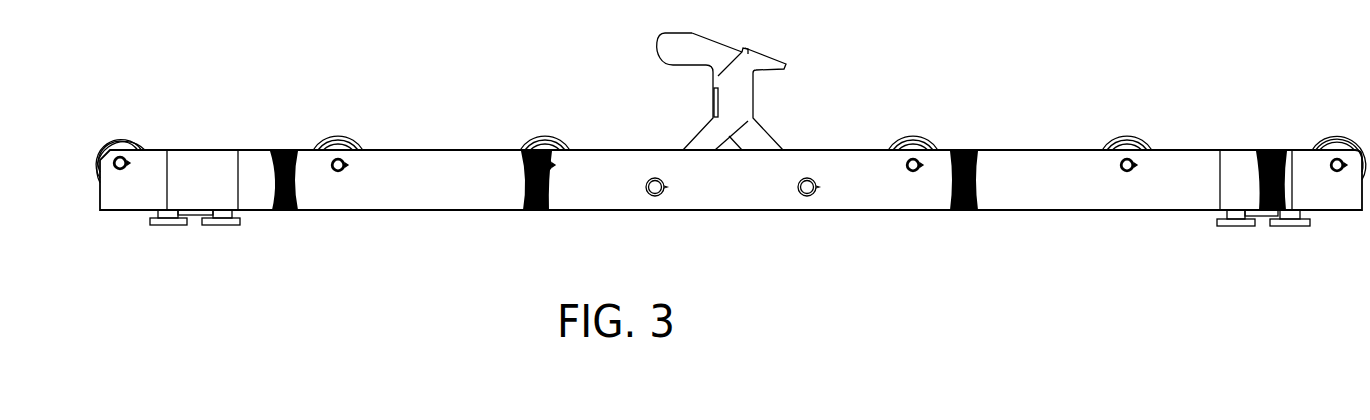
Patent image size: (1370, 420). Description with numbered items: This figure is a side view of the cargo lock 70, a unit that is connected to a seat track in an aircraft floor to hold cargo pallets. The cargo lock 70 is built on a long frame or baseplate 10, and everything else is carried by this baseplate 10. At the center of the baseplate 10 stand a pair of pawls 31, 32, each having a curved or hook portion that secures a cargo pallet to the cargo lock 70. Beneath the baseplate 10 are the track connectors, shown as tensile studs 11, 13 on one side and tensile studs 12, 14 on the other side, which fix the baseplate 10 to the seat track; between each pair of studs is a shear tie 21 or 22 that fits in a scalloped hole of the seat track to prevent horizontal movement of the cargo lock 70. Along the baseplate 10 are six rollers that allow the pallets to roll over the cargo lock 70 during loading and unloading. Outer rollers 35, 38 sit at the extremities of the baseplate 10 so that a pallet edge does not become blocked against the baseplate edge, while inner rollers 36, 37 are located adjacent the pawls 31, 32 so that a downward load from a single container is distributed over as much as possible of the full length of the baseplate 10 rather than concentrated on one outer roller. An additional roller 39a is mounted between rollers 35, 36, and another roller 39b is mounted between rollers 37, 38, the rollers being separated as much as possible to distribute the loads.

The baseplate 10 is at (508, 203).
The tensile stud 11 is at (163, 225).
The tensile stud 12 is at (1230, 226).
The tensile stud 13 is at (232, 225).
The tensile stud 14 is at (1297, 226).
The shear tie 21 is at (199, 215).
The shear tie 22 is at (1260, 217).
The pawl 31 is at (668, 47).
The pawl 32 is at (765, 68).
The outer roller 35 is at (119, 133).
The inner roller 36 is at (543, 135).
The inner roller 37 is at (910, 135).
The outer roller 38 is at (1337, 135).
The roller 39a is at (335, 135).
The roller 39b is at (1122, 135).
The cargo lock 70 is at (1043, 52).